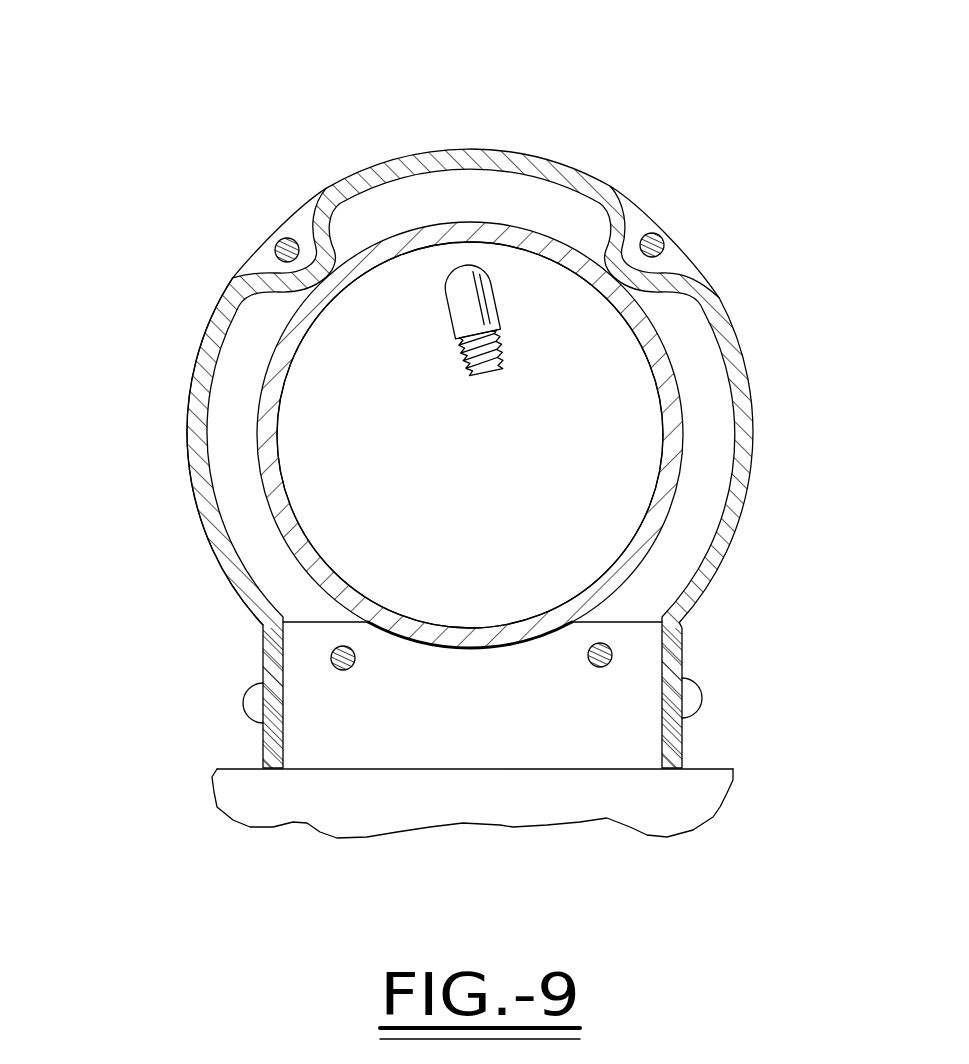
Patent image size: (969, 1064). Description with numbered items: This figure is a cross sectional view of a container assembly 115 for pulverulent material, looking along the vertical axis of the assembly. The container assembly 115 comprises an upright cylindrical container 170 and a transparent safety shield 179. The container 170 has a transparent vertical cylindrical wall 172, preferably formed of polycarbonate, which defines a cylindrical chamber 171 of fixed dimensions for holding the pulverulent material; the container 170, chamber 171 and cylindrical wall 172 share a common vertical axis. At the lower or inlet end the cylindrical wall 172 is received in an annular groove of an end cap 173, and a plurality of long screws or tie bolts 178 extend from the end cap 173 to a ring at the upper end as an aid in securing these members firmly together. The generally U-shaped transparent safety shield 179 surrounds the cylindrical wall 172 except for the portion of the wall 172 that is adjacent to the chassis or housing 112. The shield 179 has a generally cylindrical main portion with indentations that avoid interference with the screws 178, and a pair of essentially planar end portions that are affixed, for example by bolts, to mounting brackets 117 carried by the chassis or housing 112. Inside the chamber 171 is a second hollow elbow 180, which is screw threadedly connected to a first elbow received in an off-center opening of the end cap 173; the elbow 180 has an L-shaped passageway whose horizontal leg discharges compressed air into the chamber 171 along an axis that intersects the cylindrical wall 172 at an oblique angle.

The container assembly 115 is at (437, 136).
The end cap 173 is at (290, 220).
The screws or tie bolts 178 is at (274, 247).
The second hollow elbow 180 is at (453, 317).
The container 170 is at (246, 405).
The chamber 171 is at (592, 470).
The safety shield 179 is at (190, 467).
The cylindrical wall 172 is at (283, 484).
The mounting brackets 117 is at (595, 733).
The chassis or housing 112 is at (623, 797).